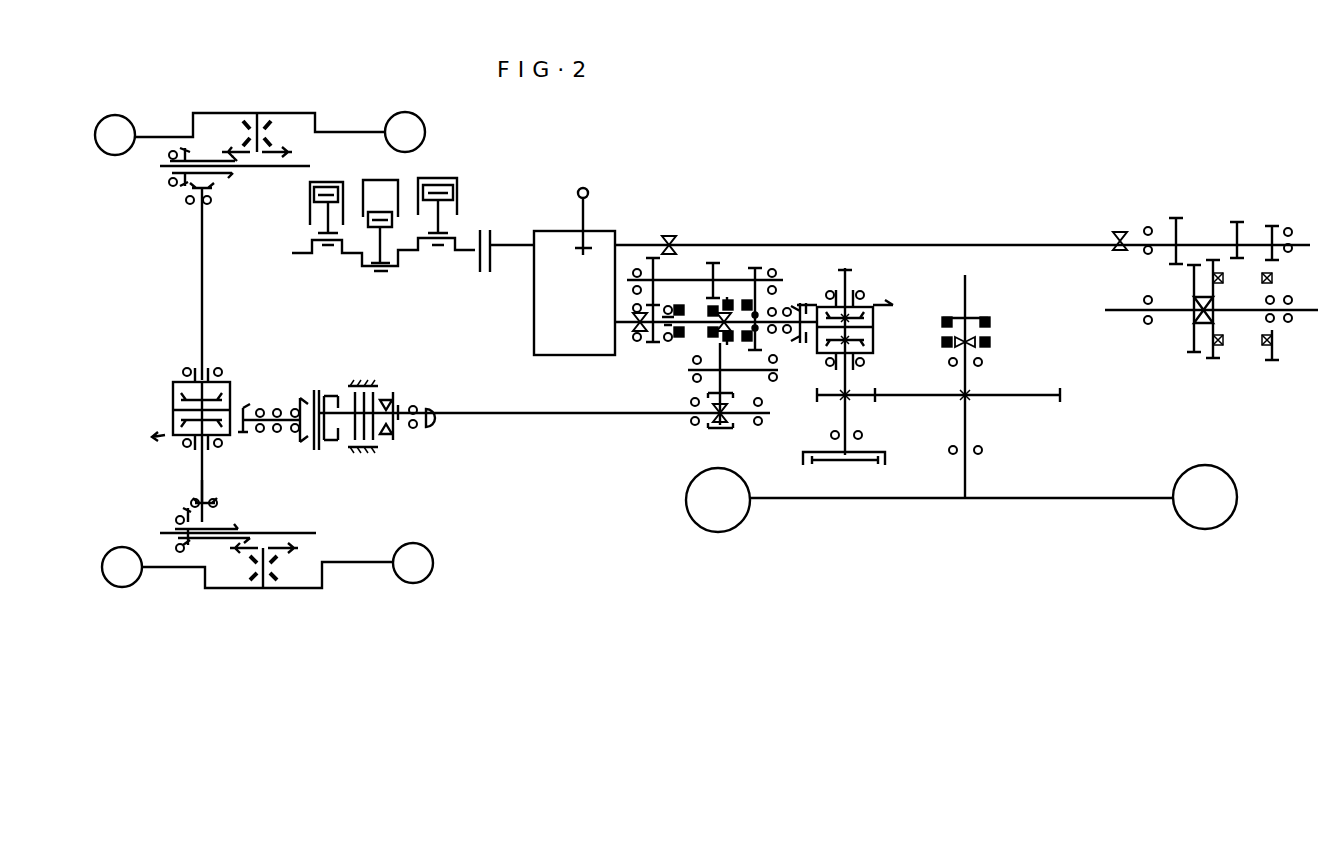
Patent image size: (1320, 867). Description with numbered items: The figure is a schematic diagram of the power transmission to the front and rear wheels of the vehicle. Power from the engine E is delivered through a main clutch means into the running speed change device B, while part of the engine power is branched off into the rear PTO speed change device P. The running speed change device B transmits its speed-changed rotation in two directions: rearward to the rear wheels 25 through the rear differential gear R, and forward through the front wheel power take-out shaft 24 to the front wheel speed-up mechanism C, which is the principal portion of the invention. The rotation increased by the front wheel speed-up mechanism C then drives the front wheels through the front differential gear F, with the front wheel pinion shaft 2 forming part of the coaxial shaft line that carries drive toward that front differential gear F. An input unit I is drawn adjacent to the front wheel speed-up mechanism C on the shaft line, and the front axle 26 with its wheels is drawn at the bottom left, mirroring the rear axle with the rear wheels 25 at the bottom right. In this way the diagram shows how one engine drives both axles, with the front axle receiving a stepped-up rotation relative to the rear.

The rear PTO speed change device P is at (1250, 212).
The engine E is at (405, 277).
The front wheel speed-up mechanism C is at (363, 372).
The input unit I is at (409, 404).
The running speed change device B is at (668, 351).
The rear differential gear R is at (881, 346).
The front differential gear F is at (240, 393).
The front wheel pinion shaft 2 is at (255, 438).
The front wheel power take-out shaft 24 is at (582, 416).
The rear wheels 25 is at (922, 502).
The front axle 26 is at (362, 568).